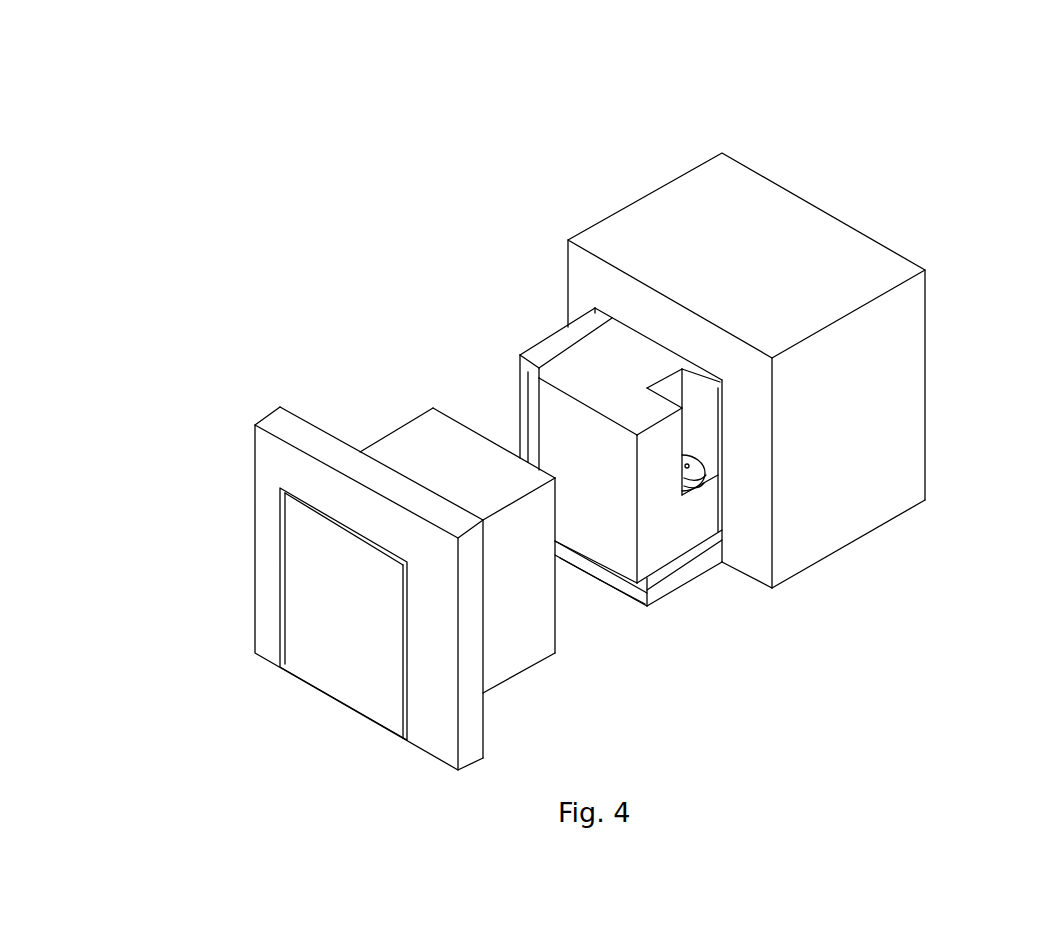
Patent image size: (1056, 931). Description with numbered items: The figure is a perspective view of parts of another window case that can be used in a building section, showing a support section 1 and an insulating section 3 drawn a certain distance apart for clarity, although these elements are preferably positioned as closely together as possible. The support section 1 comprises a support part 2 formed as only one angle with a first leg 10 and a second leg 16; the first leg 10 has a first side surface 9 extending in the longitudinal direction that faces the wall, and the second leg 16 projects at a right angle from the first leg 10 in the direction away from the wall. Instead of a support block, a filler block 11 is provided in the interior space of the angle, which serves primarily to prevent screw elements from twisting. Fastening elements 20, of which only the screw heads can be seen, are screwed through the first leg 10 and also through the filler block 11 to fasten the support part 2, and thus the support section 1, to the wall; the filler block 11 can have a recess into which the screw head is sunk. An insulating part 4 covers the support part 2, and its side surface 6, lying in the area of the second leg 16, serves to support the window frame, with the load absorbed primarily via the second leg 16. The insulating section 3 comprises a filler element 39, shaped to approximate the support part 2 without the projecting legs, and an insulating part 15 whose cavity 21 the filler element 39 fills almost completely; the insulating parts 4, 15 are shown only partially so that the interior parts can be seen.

The support section 1 is at (762, 102).
The support part 2 is at (680, 573).
The insulating section 3 is at (338, 786).
The insulating part 4 is at (812, 237).
The side surface 6 is at (568, 278).
The first side surface 9 is at (595, 577).
The first leg 10 is at (608, 577).
The filler block 11 is at (635, 358).
The insulating part 15 is at (257, 527).
The second leg 16 is at (518, 396).
The fastening element 20 is at (697, 470).
The cavity 21 is at (410, 658).
The filler element 39 is at (420, 445).